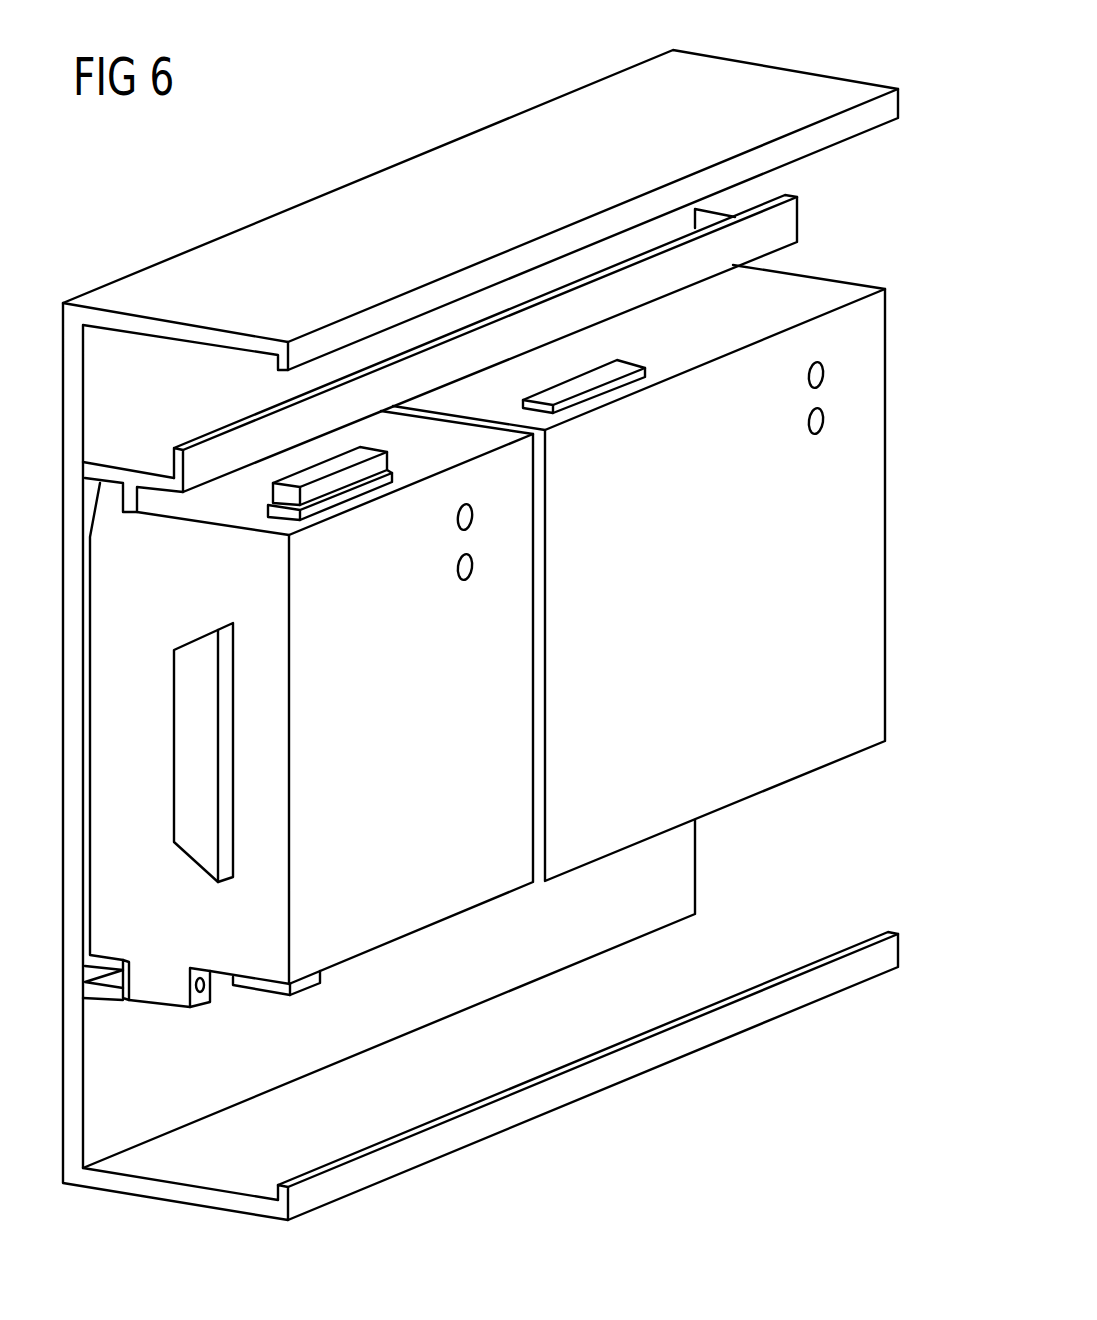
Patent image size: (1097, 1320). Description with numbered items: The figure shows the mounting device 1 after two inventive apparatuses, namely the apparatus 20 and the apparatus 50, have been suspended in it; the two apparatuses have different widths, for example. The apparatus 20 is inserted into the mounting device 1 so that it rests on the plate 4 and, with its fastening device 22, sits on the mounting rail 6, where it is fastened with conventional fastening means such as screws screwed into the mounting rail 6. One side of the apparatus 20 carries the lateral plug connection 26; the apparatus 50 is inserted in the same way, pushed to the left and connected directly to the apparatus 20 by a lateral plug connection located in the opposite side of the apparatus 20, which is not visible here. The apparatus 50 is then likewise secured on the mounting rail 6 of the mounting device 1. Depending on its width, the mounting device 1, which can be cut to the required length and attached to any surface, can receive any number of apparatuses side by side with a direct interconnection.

The mounting device 1 is at (279, 206).
The plate 4 is at (73, 846).
The mounting rail 6 is at (97, 993).
The apparatus 20 is at (78, 634).
The fastening device 22 is at (164, 986).
The lateral plug connection 26 is at (193, 739).
The apparatus 50 is at (859, 766).